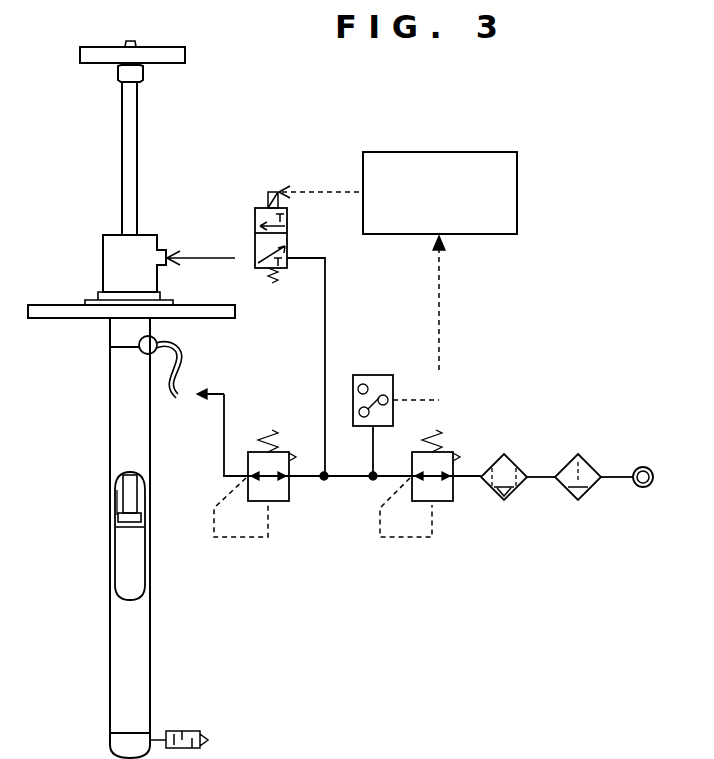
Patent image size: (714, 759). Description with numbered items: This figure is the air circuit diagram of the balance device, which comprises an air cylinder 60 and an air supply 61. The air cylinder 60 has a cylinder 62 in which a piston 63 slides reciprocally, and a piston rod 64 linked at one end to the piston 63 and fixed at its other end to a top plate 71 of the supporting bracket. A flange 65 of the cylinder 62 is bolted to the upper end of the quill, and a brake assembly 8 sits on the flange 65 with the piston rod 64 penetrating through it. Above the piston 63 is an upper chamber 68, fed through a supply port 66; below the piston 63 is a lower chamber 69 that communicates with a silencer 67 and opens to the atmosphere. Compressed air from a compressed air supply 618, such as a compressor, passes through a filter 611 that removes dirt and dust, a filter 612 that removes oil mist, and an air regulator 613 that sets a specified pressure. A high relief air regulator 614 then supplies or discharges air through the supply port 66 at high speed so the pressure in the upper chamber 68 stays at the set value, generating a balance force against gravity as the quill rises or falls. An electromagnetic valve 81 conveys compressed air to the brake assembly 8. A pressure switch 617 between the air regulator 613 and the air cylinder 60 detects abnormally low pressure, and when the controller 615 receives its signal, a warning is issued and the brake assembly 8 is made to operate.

The top plate 71 is at (160, 49).
The piston rod 64 is at (133, 120).
The brake assembly 8 is at (152, 233).
The flange 65 is at (88, 298).
The cylinder 62 is at (112, 455).
The supply port 66 is at (155, 332).
The lower chamber 69 is at (125, 570).
The upper chamber 68 is at (118, 504).
The piston 63 is at (141, 519).
The air cylinder 60 is at (185, 570).
The silencer 67 is at (190, 730).
The electromagnetic valve 81 is at (268, 192).
The controller 615 is at (440, 150).
The pressure switch 617 is at (384, 360).
The high relief air regulator 614 is at (278, 498).
The air regulator 613 is at (435, 446).
The filter 612 is at (512, 492).
The filter 611 is at (579, 456).
The compressed air supply 618 is at (643, 488).
The air supply 61 is at (526, 400).